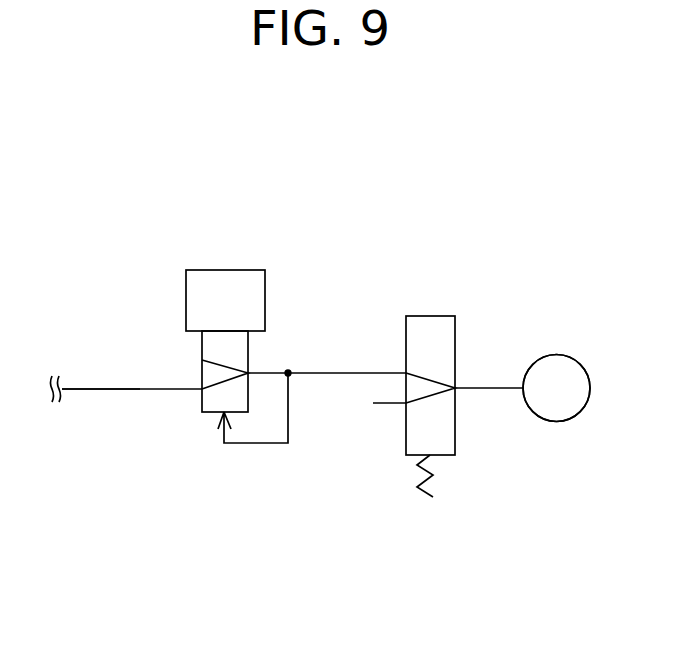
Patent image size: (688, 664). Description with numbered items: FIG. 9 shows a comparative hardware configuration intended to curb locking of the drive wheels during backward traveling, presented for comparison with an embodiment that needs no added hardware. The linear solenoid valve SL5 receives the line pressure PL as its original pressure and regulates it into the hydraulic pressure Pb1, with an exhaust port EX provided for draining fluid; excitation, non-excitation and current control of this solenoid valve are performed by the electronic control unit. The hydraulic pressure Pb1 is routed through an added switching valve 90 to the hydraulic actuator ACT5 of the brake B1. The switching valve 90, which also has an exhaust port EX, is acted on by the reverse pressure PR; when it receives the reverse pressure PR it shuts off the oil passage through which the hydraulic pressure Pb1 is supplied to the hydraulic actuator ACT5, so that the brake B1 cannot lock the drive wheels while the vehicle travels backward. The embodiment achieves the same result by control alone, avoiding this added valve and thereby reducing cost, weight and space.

The linear solenoid valve SL5 is at (235, 280).
The line pressure PL is at (101, 373).
The hydraulic pressure Pb1 is at (295, 359).
The exhaust EX is at (280, 382).
The switching valve 90 is at (445, 328).
The reverse pressure PR is at (430, 316).
The hydraulic actuator ACT5 is at (557, 365).
The brake B1 is at (556, 388).